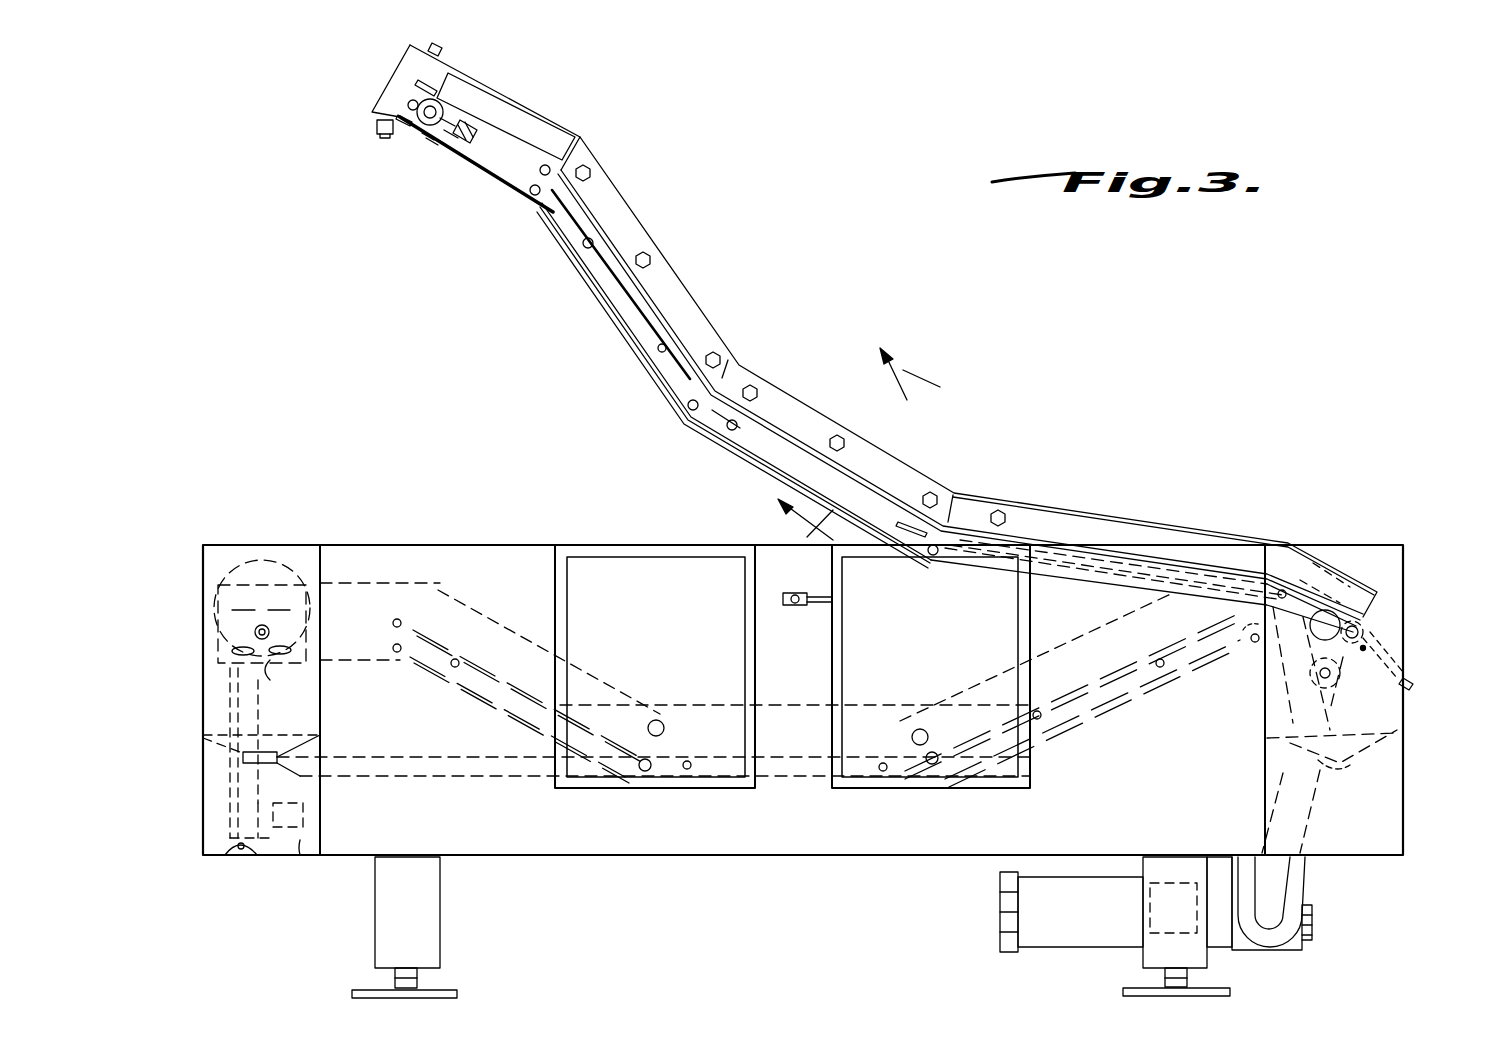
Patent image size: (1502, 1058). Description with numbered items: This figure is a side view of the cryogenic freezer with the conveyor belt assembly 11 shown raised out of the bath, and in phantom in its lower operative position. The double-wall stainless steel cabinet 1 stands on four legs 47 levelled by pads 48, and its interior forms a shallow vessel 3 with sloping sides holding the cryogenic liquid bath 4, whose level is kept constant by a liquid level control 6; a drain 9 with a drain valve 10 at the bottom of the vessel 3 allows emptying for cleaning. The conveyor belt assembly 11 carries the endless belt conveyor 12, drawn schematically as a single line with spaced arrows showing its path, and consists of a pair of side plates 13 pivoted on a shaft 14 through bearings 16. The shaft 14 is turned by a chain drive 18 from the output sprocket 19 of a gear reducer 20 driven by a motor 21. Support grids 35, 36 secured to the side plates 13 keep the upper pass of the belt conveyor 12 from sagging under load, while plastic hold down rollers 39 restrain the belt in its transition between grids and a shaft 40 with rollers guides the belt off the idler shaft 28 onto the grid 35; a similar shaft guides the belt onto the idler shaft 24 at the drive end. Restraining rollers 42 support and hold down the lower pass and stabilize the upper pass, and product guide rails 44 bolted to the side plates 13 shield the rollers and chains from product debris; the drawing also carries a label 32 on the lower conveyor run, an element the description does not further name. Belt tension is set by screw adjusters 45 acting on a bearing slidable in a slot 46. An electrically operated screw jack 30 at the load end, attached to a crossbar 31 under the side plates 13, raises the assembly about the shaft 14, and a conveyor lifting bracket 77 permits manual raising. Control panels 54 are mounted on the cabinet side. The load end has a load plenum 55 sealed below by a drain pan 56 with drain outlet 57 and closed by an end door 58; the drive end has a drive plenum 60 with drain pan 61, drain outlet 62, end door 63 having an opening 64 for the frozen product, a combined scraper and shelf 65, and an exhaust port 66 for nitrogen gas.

The cabinet 1 is at (604, 862).
The shallow vessel 3 is at (800, 780).
The cryogenic liquid bath 4 is at (847, 436).
The liquid level control 6 is at (797, 608).
The drain 9 is at (470, 790).
The drain valve 10 is at (298, 855).
The conveyor belt assembly 11 is at (622, 190).
The endless belt conveyor 12 is at (645, 305).
The side plates 13 is at (655, 372).
The shaft 14 is at (1340, 680).
The bearings 16 is at (970, 533).
The chain drive 18 is at (1310, 835).
The output sprocket 19 is at (1312, 930).
The gear reducer 20 is at (1285, 950).
The motor 21 is at (1098, 918).
The idler shaft 24 is at (1365, 628).
The idler shaft 28 is at (423, 125).
The screw jack 30 is at (377, 126).
The crossbar 31 is at (262, 749).
The conveyor belt run 32 is at (778, 476).
The support grid 35 is at (580, 248).
The support grid 36 is at (735, 433).
The hold down rollers 39 is at (740, 380).
The shaft 40 is at (578, 162).
The restraining rollers 42 is at (531, 196).
The product guide rails 44 is at (868, 435).
The screw adjusters 45 is at (450, 138).
The slot 46 is at (410, 102).
The legs 47 is at (375, 917).
The pads 48 is at (362, 990).
The control panels 54 is at (832, 675).
The load plenum 55 is at (212, 722).
The drain pan 56 is at (300, 735).
The drain outlet 57 is at (277, 763).
The door 58 is at (210, 600).
The drive plenum 60 is at (1395, 565).
The drain pan 61 is at (1390, 737).
The drain outlet 62 is at (1335, 770).
The door 63 is at (1405, 820).
The opening 64 is at (1405, 642).
The combined scraper and shelf 65 is at (1405, 672).
The exhaust port 66 is at (1340, 550).
The conveyor lifting bracket 77 is at (447, 50).